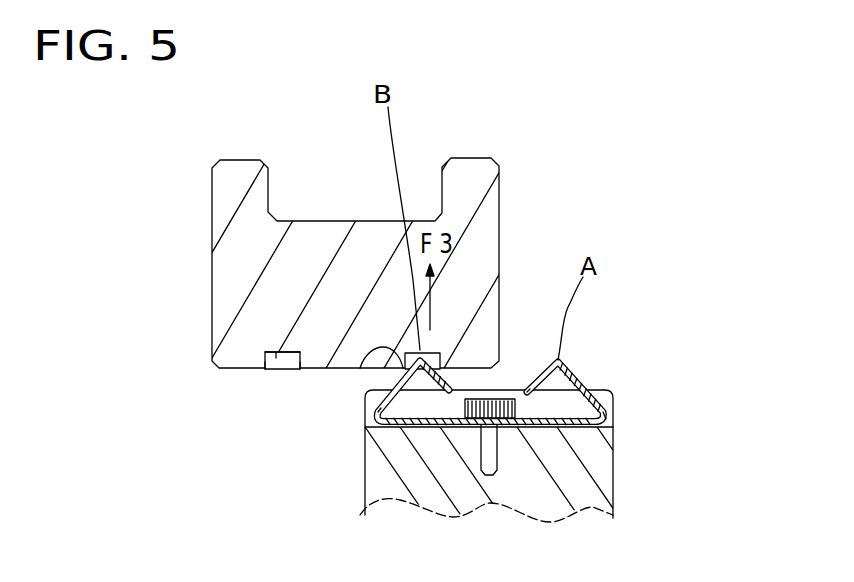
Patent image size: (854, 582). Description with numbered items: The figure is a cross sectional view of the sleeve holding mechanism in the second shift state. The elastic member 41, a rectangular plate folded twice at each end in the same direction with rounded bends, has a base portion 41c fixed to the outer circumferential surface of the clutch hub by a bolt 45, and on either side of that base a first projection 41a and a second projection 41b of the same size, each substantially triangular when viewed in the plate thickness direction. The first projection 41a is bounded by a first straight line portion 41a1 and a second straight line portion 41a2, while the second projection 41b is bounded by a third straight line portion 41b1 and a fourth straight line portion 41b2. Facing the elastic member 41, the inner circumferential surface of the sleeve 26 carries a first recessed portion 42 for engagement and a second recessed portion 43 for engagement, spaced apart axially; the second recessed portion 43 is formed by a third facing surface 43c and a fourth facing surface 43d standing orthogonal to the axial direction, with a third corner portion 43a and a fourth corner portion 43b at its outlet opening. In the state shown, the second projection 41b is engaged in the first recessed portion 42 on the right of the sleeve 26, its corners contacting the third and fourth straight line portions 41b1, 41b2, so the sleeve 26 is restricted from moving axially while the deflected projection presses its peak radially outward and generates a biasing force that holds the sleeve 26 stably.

The sleeve 26 is at (222, 193).
The first recessed portion for engagement 42 is at (403, 348).
The second recessed portion for engagement 43 is at (282, 357).
The third corner portion 43a is at (294, 371).
The fourth corner portion 43b is at (265, 371).
The third facing surface 43c is at (293, 353).
The fourth facing surface 43d is at (268, 355).
The elastic member 41 is at (577, 357).
The first projection 41a is at (585, 380).
The first straight line portion 41a1 is at (591, 389).
The second straight line portion 41a2 is at (526, 385).
The second projection 41b is at (360, 368).
The third straight line portion 41b1 is at (448, 372).
The fourth straight line portion 41b2 is at (390, 374).
The base portion 41c is at (550, 428).
The bolt 45 is at (497, 398).